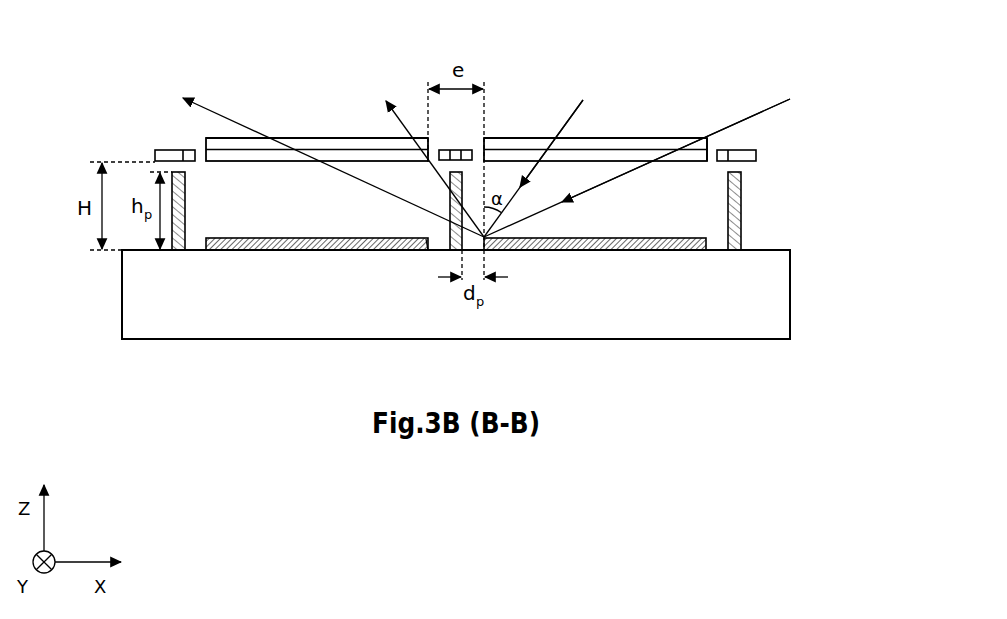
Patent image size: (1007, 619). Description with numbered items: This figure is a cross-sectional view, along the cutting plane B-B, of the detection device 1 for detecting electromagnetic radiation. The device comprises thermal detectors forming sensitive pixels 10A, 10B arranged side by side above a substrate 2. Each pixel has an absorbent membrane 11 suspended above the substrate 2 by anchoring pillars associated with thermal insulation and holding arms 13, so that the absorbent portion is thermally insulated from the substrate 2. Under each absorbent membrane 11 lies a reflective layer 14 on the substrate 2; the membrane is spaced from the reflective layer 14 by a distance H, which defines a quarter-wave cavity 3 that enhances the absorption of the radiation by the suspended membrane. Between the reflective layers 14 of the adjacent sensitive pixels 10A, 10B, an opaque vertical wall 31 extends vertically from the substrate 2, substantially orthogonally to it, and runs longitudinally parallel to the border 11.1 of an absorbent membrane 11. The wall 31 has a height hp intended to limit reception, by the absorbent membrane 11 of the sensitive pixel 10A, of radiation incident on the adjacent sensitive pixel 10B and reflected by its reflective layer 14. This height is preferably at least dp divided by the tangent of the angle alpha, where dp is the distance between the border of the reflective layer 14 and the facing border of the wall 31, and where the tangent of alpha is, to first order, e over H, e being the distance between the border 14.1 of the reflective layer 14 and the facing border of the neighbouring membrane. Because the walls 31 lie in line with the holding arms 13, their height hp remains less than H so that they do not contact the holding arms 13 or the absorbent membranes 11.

The detection device 1 is at (126, 62).
The substrate 2 is at (792, 293).
The quarter-wave cavity 3 is at (270, 211).
The sensitive pixel 10A is at (258, 96).
The adjacent sensitive pixel 10B is at (541, 94).
The absorbent membrane 11 is at (318, 136).
The border of the absorbent membrane 11.1 is at (710, 149).
The holding arm 13 is at (154, 156).
The reflective layer 14 is at (317, 252).
The border of the reflective layer 14.1 is at (437, 251).
The opaque vertical wall 31 is at (178, 252).